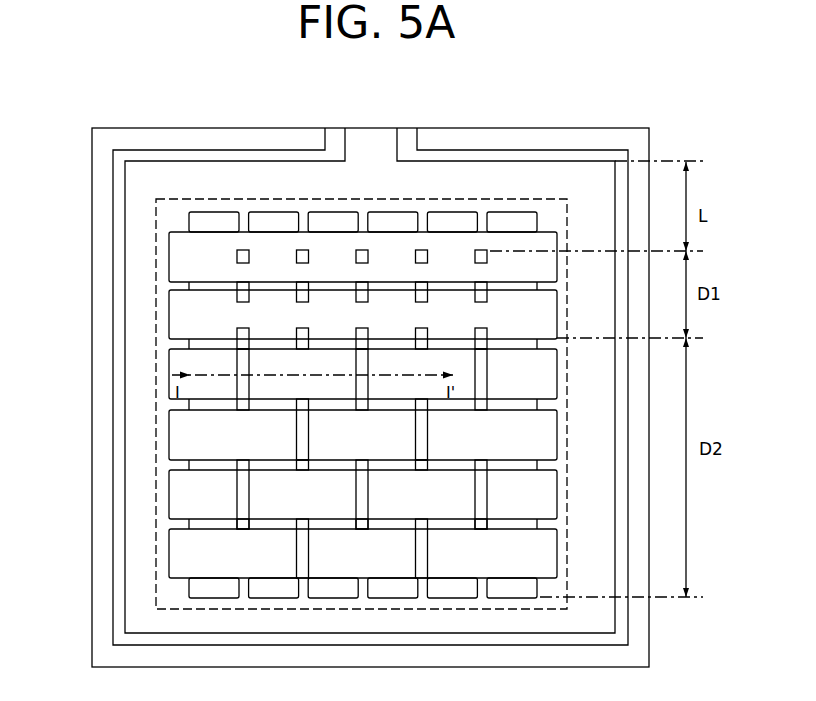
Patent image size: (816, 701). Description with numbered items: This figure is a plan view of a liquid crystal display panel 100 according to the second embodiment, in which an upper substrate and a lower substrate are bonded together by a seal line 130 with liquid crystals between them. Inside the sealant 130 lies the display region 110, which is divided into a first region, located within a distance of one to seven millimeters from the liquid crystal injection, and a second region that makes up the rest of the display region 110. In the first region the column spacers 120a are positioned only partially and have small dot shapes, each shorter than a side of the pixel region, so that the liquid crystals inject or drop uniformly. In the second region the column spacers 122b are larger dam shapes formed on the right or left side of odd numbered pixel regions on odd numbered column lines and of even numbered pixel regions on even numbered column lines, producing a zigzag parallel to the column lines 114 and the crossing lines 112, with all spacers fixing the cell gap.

The liquid crystal display panel 100 is at (590, 128).
The seal line 130 is at (281, 150).
The display region 110 is at (182, 199).
The column lines 114 is at (510, 212).
The second electrode bars 112 is at (169, 257).
The column spacer 120a is at (243, 253).
The column spacer 122b is at (237, 495).